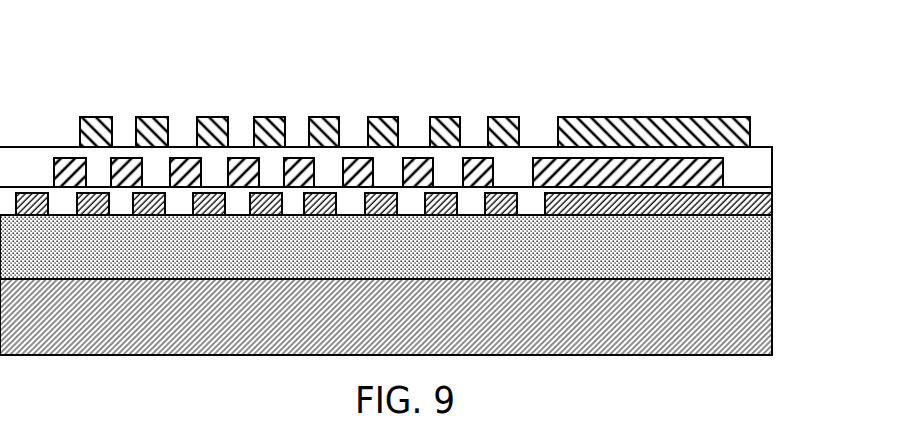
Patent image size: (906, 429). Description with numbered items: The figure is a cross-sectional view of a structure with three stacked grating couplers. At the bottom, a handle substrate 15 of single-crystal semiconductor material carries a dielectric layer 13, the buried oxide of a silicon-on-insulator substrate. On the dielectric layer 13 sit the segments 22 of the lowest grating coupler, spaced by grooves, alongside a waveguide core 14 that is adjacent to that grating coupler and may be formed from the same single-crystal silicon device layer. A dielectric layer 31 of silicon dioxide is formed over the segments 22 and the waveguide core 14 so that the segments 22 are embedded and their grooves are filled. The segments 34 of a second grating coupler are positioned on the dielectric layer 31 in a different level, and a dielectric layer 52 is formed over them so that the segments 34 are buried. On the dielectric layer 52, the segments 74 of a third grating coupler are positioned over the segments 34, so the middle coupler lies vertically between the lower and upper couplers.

The dielectric layer 13 is at (750, 250).
The waveguide core 14 is at (758, 207).
The handle substrate 15 is at (748, 318).
The segments 22 is at (33, 192).
The dielectric layer 31 is at (532, 207).
The segments 34 is at (127, 162).
The dielectric layer 52 is at (740, 172).
The segments 74 is at (97, 127).